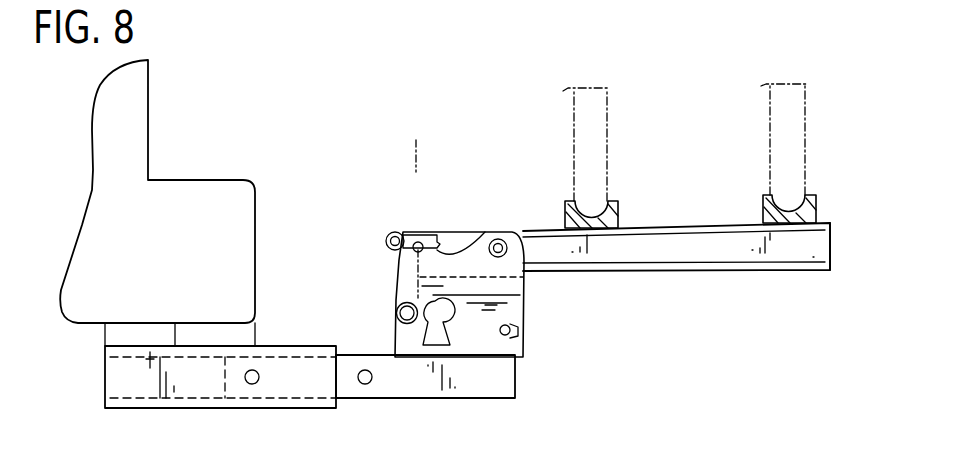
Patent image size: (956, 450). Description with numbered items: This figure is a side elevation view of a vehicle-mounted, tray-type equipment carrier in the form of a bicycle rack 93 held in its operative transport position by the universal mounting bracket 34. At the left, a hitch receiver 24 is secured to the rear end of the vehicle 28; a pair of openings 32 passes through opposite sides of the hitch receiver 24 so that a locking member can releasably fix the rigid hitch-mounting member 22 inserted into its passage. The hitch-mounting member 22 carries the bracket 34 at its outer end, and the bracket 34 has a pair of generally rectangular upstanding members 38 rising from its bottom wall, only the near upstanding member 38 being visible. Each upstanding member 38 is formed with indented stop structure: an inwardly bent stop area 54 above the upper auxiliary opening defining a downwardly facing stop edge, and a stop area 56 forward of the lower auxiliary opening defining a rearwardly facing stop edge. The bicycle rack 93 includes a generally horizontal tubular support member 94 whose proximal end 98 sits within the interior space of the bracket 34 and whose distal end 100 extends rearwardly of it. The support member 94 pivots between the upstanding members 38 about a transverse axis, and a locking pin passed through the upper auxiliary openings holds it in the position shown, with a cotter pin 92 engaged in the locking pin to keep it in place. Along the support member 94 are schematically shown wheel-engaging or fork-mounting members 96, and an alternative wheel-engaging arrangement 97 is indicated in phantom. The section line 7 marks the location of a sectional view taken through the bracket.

The section line 7 is at (412, 145).
The hitch-mounting member 22 is at (405, 402).
The hitch receiver 24 is at (120, 410).
The vehicle 28 is at (175, 128).
The openings 32 is at (251, 370).
The universal mounting bracket 34 is at (352, 278).
The upstanding member 38 is at (525, 297).
The stop area 54 is at (418, 324).
The stop area 56 is at (518, 333).
The cotter pin 92 is at (388, 236).
The bicycle rack 93 is at (505, 138).
The horizontal support member 94 is at (748, 277).
The bicycle wheel-engaging or fork-mounting members 96 is at (618, 212).
The bicycle wheel-engaging arrangement 97 is at (607, 120).
The proximal end 98 is at (418, 236).
The distal end 100 is at (833, 240).